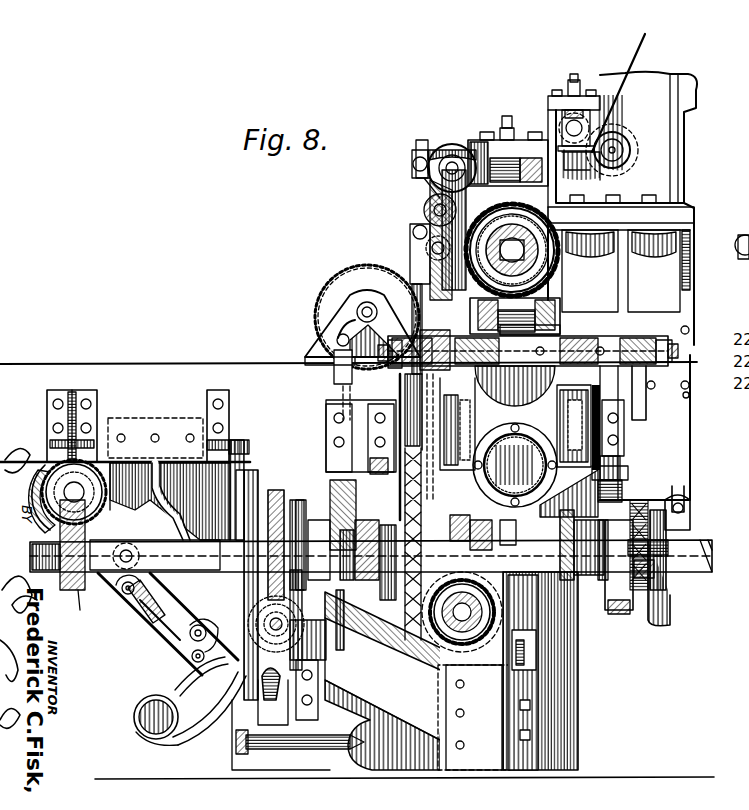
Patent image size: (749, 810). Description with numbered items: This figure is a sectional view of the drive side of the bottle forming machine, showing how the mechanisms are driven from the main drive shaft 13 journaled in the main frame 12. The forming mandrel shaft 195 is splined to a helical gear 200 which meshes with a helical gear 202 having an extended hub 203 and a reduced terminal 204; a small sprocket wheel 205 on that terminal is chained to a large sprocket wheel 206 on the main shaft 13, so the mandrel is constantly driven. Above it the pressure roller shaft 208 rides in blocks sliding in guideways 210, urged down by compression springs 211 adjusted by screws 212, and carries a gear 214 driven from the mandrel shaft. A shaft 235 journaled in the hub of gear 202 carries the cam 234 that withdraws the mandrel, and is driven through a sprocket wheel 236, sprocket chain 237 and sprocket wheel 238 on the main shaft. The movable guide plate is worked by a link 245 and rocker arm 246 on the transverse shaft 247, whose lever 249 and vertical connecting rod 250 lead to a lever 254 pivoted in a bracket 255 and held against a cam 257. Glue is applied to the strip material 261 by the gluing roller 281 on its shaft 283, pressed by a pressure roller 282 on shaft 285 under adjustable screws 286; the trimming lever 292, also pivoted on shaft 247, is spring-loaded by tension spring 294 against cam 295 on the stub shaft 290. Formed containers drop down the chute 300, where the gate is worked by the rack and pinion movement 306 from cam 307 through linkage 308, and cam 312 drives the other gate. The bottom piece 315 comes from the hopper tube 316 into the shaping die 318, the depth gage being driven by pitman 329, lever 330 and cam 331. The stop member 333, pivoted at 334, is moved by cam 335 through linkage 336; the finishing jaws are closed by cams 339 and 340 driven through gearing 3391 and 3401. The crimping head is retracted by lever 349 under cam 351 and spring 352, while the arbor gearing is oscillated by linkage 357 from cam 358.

The main frame 12 is at (162, 370).
The main drive shaft 13 is at (712, 546).
The transverse shaft 195 is at (540, 245).
The helical gear 200 is at (575, 262).
The helical gear 202 is at (605, 300).
The extended hub 203 is at (420, 320).
The reduced terminal 204 is at (398, 360).
The small sprocket wheel 205 is at (405, 395).
The large sprocket wheel 206 is at (425, 500).
The shaft 208 is at (548, 190).
The guideways 210 is at (475, 155).
The compression springs 211 is at (530, 160).
The screws 212 is at (503, 120).
The gear 214 is at (496, 158).
The cam 234 is at (570, 345).
The shaft 235 is at (590, 340).
The sprocket wheel 236 is at (620, 345).
The sprocket chain 237 is at (642, 402).
The sprocket wheel 238 is at (628, 490).
The link 245 is at (414, 232).
The rocker arm 246 is at (444, 240).
The transverse shaft 247 is at (432, 200).
The lever 249 is at (438, 220).
The vertical connecting rod 250 is at (432, 256).
The lever 254 is at (332, 425).
The bracket 255 is at (336, 406).
The cam 257 is at (340, 470).
The strip material 261 is at (640, 36).
The gluing roller 281 is at (628, 150).
The pressure roller 282 is at (626, 132).
The transverse shaft 283 is at (628, 160).
The transverse shaft 285 is at (572, 120).
The adjustable screws 286 is at (580, 80).
The transverse stub shaft 290 is at (428, 160).
The lever 292 is at (414, 166).
The tension spring 294 is at (432, 150).
The cam 295 is at (420, 148).
The chute 300 is at (195, 720).
The rack and pinion movement 306 is at (340, 293).
The cam 307 is at (340, 530).
The linkage 308 is at (352, 315).
The cam 312 is at (700, 576).
The bottom piece 315 is at (515, 465).
The hopper tube 316 is at (490, 478).
The shaping die 318 is at (692, 512).
The pitman 329 is at (596, 610).
The lever 330 is at (635, 598).
The cam 331 is at (607, 606).
The stop member 333 is at (192, 660).
The pivot 334 is at (194, 638).
The cam 335 is at (32, 500).
The linkage 336 is at (152, 618).
The cam 339 is at (44, 470).
The gearing 3391 is at (81, 609).
The cam 340 is at (455, 640).
The gearing 3401 is at (444, 690).
The lever 349 is at (244, 608).
The cam 351 is at (236, 590).
The spring 352 is at (280, 720).
The linkage 357 is at (268, 730).
The cam 358 is at (240, 548).